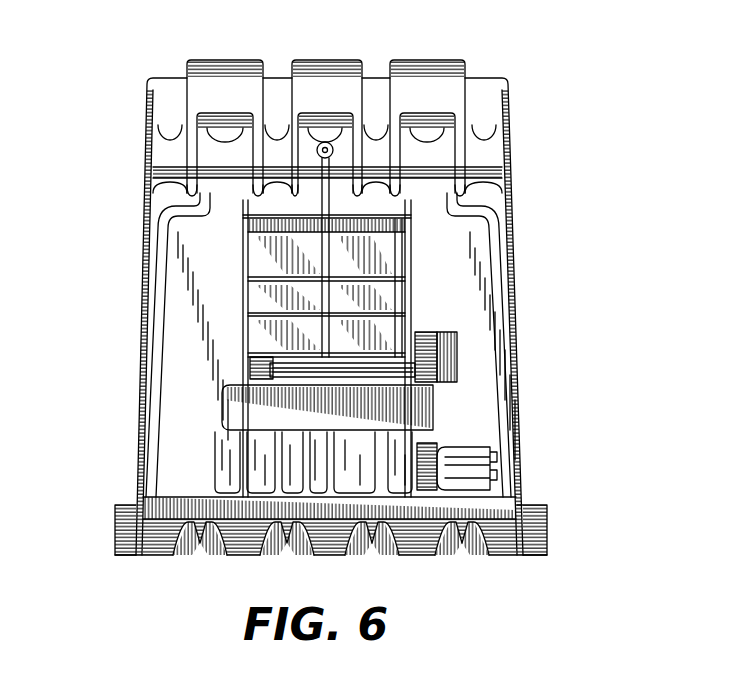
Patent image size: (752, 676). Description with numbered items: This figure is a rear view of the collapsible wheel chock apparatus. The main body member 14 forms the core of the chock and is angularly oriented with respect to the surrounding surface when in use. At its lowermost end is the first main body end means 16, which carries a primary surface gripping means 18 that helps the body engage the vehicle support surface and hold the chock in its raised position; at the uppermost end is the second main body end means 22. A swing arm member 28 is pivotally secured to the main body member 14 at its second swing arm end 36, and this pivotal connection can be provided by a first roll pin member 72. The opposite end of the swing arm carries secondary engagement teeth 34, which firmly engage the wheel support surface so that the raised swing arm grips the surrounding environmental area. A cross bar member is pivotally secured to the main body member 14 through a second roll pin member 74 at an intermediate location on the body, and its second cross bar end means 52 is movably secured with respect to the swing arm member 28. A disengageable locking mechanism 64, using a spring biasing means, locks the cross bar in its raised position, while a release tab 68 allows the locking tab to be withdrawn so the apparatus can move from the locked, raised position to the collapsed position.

The main body member 14 is at (338, 107).
The second main body end means 22 is at (196, 58).
The first roll pin member 72 is at (145, 165).
The second roll pin member 74 is at (296, 364).
The swing arm member 28 is at (154, 386).
The release tab 68 is at (453, 355).
The disengageable locking mechanism 64 is at (430, 367).
The second cross bar end means 52 is at (222, 414).
The first main body end means 16 is at (115, 540).
The primary surface gripping means 18 is at (121, 558).
The secondary engagement teeth 34 is at (237, 556).
The second swing arm end 36 is at (522, 533).